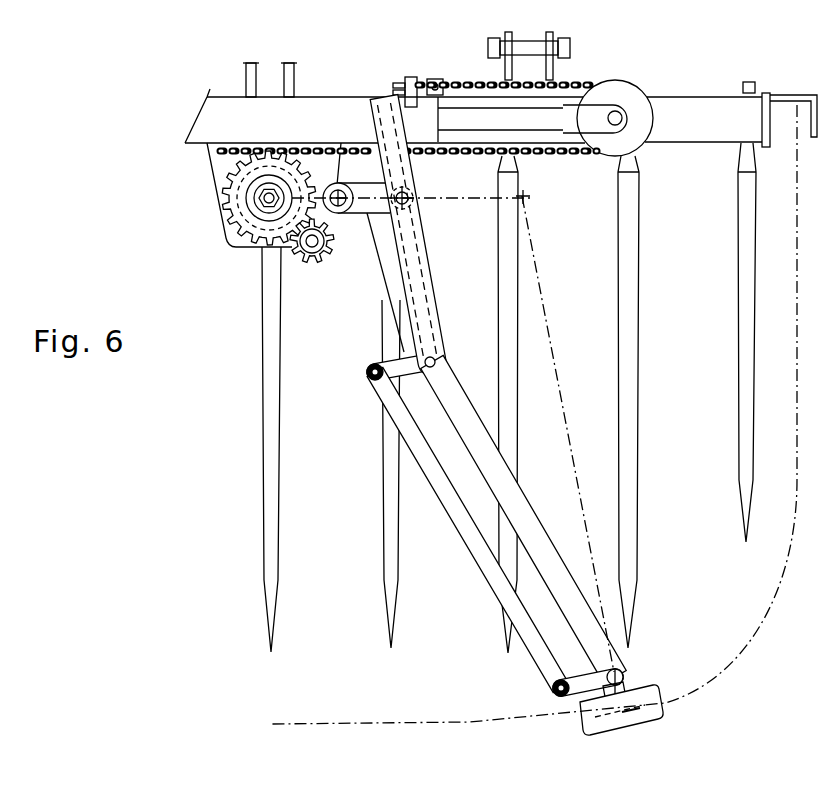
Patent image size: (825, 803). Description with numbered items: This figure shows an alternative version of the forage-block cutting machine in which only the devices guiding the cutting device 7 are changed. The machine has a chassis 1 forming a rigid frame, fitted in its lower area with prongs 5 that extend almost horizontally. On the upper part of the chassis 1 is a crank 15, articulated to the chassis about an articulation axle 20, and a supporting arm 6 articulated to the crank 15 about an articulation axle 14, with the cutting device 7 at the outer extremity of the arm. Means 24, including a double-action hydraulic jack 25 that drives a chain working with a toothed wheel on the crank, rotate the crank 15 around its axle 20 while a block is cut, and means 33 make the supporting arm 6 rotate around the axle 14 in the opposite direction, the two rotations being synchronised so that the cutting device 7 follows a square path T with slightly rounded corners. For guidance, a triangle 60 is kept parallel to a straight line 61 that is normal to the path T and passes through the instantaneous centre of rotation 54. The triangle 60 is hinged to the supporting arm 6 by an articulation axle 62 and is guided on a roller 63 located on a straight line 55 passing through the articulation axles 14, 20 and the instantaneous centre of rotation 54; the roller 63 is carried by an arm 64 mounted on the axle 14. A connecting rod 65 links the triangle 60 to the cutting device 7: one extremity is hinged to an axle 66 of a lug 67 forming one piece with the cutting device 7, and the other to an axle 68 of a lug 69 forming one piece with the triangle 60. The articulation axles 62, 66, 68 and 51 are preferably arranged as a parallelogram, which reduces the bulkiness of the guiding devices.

The chassis 1 is at (680, 110).
The prongs 5 is at (743, 444).
The supporting arm 6 is at (578, 587).
The cutting device 7 is at (661, 715).
The articulation axle 14 is at (340, 214).
The crank 15 is at (262, 252).
The articulation axle 20 is at (257, 204).
The means for driving the crank 24 is at (220, 163).
The double-action hydraulic jack 25 is at (325, 107).
The means for rotating the supporting arm 33 is at (252, 248).
The articulation axle 51 is at (624, 672).
The instantaneous centre of rotation 54 is at (527, 200).
The straight line 55 is at (472, 200).
The triangle 60 is at (421, 277).
The straight line 61 is at (546, 302).
The articulation axle 62 is at (436, 362).
The roller 63 is at (413, 194).
The arm 64 is at (361, 214).
The connecting rod 65 is at (476, 543).
The axle 66 is at (553, 688).
The lug 67 is at (582, 690).
The axle 68 is at (368, 373).
The lug 69 is at (392, 355).
The path T is at (755, 637).